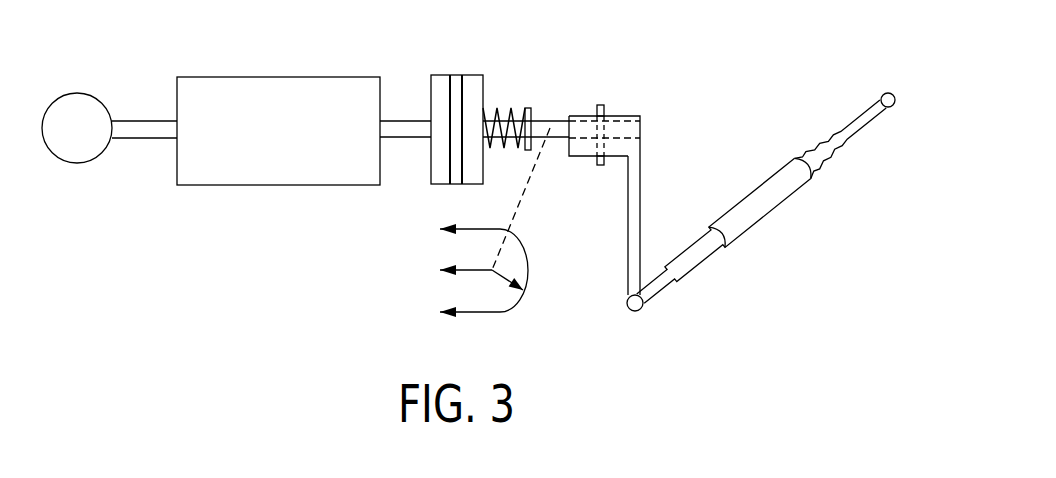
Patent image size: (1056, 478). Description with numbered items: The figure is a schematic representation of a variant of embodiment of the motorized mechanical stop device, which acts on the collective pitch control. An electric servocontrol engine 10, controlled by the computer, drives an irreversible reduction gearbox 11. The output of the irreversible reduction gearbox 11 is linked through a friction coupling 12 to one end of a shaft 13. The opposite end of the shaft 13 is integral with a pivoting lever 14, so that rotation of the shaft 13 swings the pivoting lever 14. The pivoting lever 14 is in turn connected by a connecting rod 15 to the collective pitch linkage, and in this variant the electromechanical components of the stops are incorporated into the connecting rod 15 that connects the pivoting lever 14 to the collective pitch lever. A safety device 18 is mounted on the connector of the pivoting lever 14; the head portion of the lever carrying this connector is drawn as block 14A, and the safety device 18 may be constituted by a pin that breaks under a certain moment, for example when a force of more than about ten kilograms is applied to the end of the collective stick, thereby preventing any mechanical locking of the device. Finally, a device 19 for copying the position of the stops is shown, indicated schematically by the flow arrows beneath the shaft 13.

The electric servocontrol engine 10 is at (77, 103).
The irreversible reduction gearbox 11 is at (218, 88).
The friction coupling 12 is at (440, 83).
The shaft 13 is at (542, 118).
The pivoting lever 14 is at (635, 177).
The lever arm head block 14A is at (589, 147).
The safety device 18 is at (604, 103).
The connecting rod 15 is at (770, 205).
The device for copying the position of the stops 19 is at (481, 314).